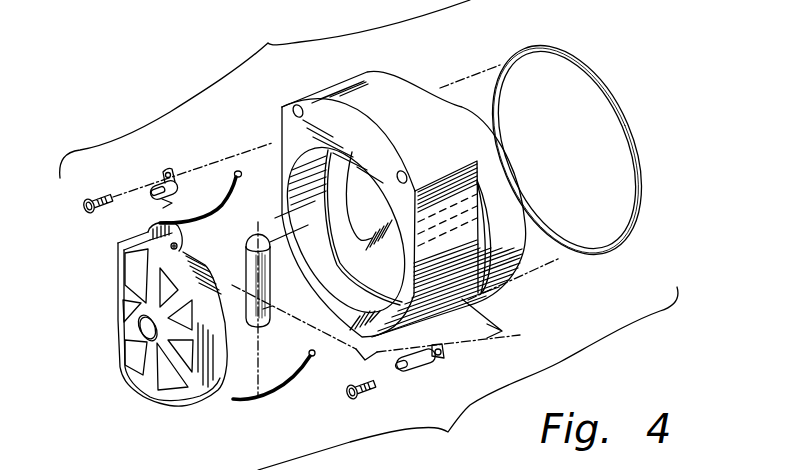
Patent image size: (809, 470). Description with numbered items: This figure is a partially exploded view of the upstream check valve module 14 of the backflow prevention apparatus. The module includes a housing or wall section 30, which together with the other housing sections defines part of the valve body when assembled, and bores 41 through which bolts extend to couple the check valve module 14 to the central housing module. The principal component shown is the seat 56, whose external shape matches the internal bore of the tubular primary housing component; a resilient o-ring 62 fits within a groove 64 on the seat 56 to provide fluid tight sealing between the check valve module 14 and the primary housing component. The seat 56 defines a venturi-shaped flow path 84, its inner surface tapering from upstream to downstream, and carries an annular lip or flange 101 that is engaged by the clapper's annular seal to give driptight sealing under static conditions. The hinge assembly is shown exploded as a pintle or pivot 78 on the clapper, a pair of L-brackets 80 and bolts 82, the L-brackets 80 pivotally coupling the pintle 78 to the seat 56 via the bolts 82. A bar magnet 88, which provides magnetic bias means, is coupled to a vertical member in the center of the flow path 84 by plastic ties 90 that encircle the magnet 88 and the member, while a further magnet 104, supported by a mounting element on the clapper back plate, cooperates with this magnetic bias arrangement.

The first check valve module 14 is at (424, 62).
The housing or wall section 30 is at (347, 88).
The bores 41 is at (296, 108).
The seat 56 is at (297, 158).
The resilient o-ring 62 is at (575, 60).
The groove 64 is at (485, 298).
The pintle or pivot 78 is at (147, 233).
The L-brackets 80 is at (168, 168).
The bolts 82 is at (103, 195).
The venturi-shaped flow path 84 is at (378, 205).
The bar magnet 88 is at (248, 236).
The plastic ties 90 is at (208, 214).
The annular lip or flange 101 is at (268, 309).
The magnet 104 is at (217, 238).